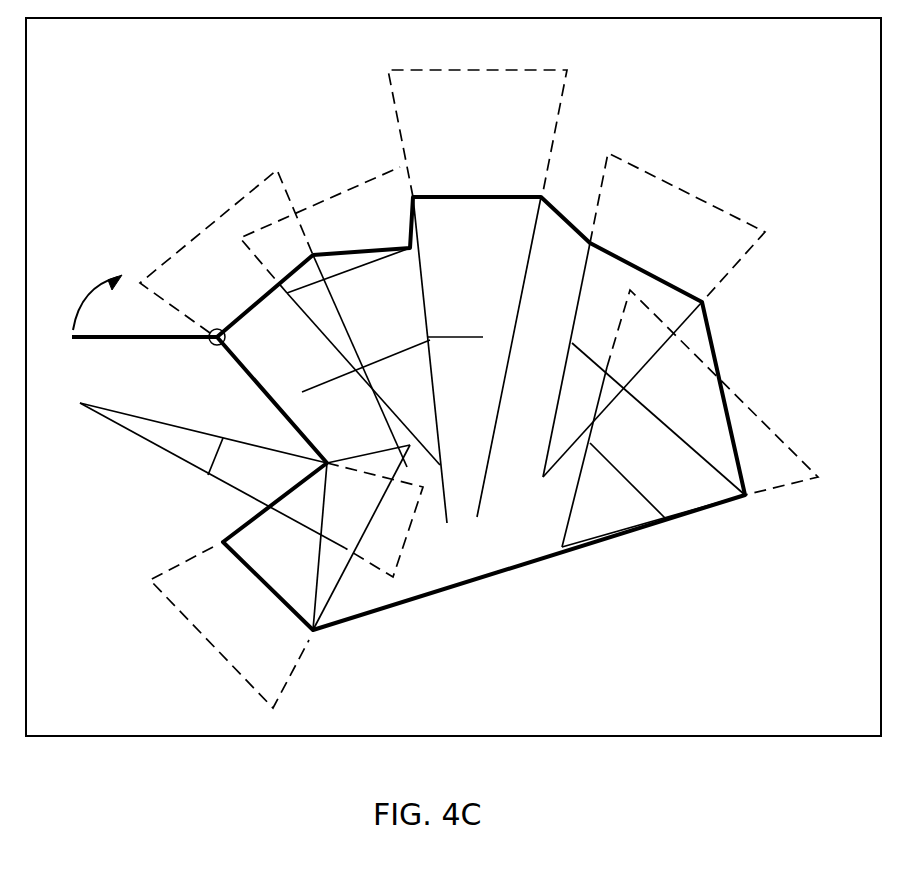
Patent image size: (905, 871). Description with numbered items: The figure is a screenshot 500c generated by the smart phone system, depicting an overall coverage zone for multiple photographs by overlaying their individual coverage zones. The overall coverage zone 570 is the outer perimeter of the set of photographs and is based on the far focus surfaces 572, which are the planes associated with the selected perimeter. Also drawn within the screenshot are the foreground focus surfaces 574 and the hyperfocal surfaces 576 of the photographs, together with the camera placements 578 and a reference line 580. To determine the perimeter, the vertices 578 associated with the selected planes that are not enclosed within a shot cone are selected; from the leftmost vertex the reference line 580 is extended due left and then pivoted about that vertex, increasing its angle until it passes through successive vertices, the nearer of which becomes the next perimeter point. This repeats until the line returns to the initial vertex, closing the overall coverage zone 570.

The screenshot 500c is at (598, 736).
The overall coverage zone 570 is at (538, 561).
The far focus surfaces 572 is at (607, 250).
The foreground focus surfaces 574 is at (572, 343).
The hyperfocal surfaces 576 is at (435, 70).
The camera placements 578 is at (383, 447).
The reference line 580 is at (112, 338).